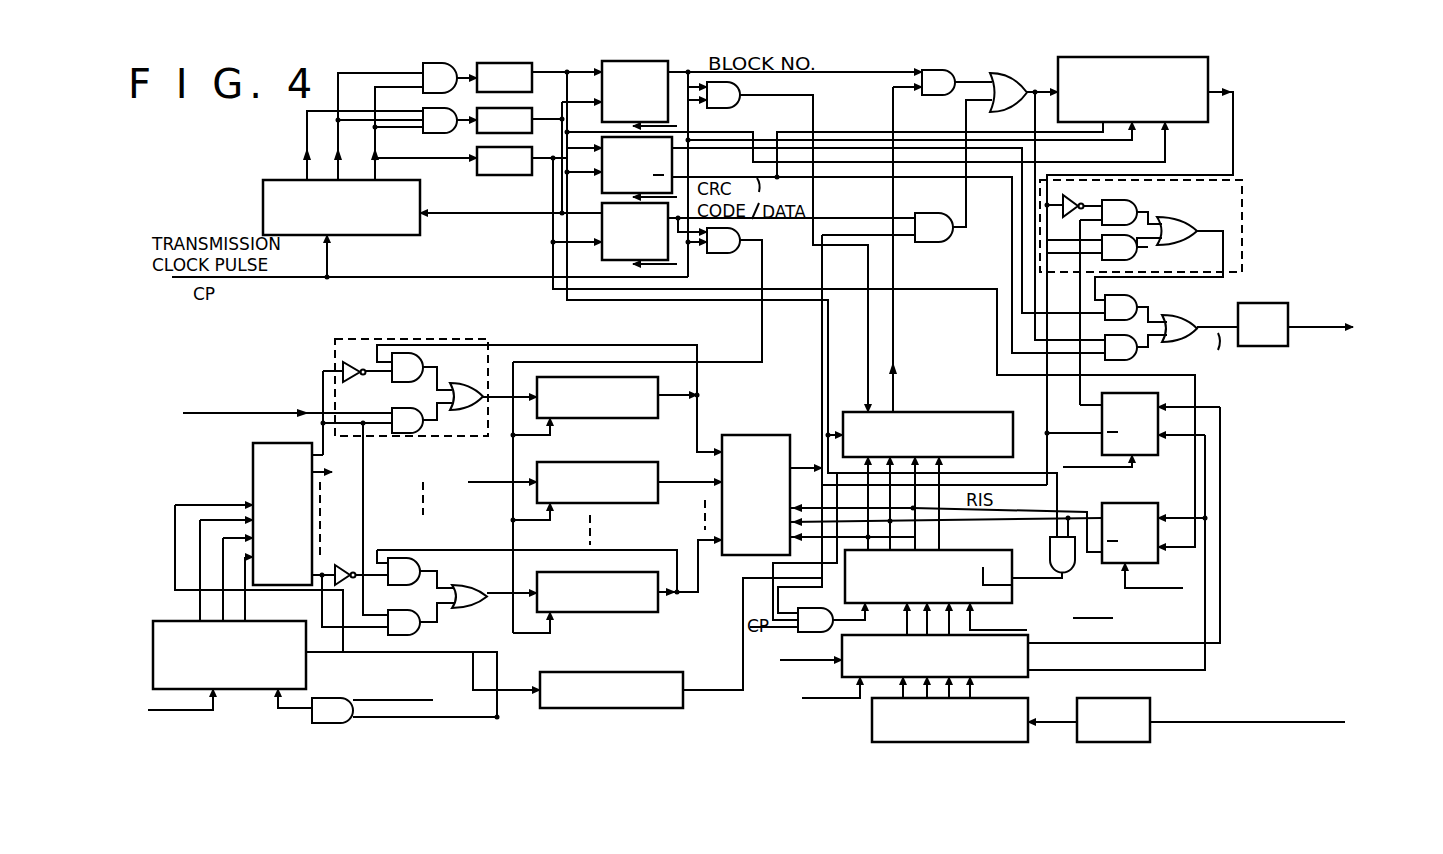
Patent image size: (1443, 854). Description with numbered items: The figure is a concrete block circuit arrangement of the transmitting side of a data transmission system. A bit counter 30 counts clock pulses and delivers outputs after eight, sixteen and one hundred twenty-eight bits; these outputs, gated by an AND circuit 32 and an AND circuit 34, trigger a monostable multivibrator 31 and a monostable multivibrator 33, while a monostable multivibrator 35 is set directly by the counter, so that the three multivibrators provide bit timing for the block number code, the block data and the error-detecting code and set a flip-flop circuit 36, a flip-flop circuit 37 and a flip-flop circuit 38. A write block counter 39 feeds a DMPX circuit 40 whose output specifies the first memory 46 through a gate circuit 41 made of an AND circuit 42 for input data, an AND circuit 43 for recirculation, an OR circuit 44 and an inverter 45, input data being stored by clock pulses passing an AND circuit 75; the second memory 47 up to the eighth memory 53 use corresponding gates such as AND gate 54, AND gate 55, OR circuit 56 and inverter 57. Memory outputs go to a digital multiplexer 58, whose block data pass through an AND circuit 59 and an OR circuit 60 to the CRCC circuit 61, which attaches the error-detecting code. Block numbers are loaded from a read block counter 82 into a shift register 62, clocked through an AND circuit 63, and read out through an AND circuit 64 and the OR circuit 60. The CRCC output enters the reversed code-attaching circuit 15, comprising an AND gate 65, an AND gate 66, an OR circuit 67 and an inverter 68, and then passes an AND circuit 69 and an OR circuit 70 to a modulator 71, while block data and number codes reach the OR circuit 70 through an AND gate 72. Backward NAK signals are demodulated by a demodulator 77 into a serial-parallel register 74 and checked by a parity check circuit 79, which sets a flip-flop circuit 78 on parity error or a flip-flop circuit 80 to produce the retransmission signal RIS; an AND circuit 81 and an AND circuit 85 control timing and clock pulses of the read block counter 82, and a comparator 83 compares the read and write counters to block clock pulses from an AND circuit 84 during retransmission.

The reversed code-attaching circuit 15 is at (1242, 212).
The bit counter 30 is at (263, 188).
The monostable multivibrator M·M1 31 is at (522, 92).
The AND circuit 32 is at (426, 89).
The monostable multivibrator M·M2 33 is at (478, 133).
The AND circuit 34 is at (426, 136).
The monostable multivibrator M·M3 35 is at (514, 170).
The flip-flop circuit 36 is at (600, 79).
The flip-flop circuit 37 is at (600, 179).
The flip-flop circuit 38 is at (623, 237).
The write block counter 39 is at (168, 605).
The demultiplex (DMPX) circuit 40 is at (253, 477).
The gate circuit 41 is at (335, 352).
The AND circuit 42 is at (405, 433).
The AND circuit 43 is at (408, 355).
The OR circuit 44 is at (463, 410).
The inverter 45 is at (353, 360).
The MEMORY 1 46 is at (635, 420).
The MEMORY 2 47 is at (635, 505).
The MEMORY 8 53 is at (635, 613).
The AND gate 54 is at (415, 635).
The AND gate 55 is at (408, 558).
The OR circuit 56 is at (460, 585).
The inverter 57 is at (360, 564).
The digital multiplexer 58 is at (754, 432).
The AND circuit 59 is at (940, 239).
The OR circuit 60 is at (1012, 78).
The error detecting code-attaching circuit (CRCC circuit) 61 is at (1210, 82).
The shift register 62 is at (935, 412).
The AND circuit 63 is at (742, 95).
The AND circuit 64 is at (949, 74).
The AND gate 65 is at (1143, 190).
The AND gate 66 is at (1135, 250).
The OR circuit 67 is at (1177, 225).
The inverter 68 is at (1075, 198).
The AND circuit 69 is at (1145, 288).
The OR circuit 70 is at (1175, 310).
The modulator 71 is at (1260, 302).
The AND gate 72 is at (1139, 345).
The serial-parallel register 74 is at (868, 722).
The AND circuit 75 is at (730, 253).
The demodulator 77 is at (1121, 705).
The flip-flop circuit 78 is at (1097, 418).
The parity check circuit 79 is at (1030, 672).
The flip-flop circuit 80 is at (1135, 507).
The AND circuit 81 is at (1050, 562).
The read block counter 82 is at (995, 559).
The comparator 83 is at (683, 680).
The AND circuit 84 is at (332, 698).
The AND circuit 85 is at (826, 617).